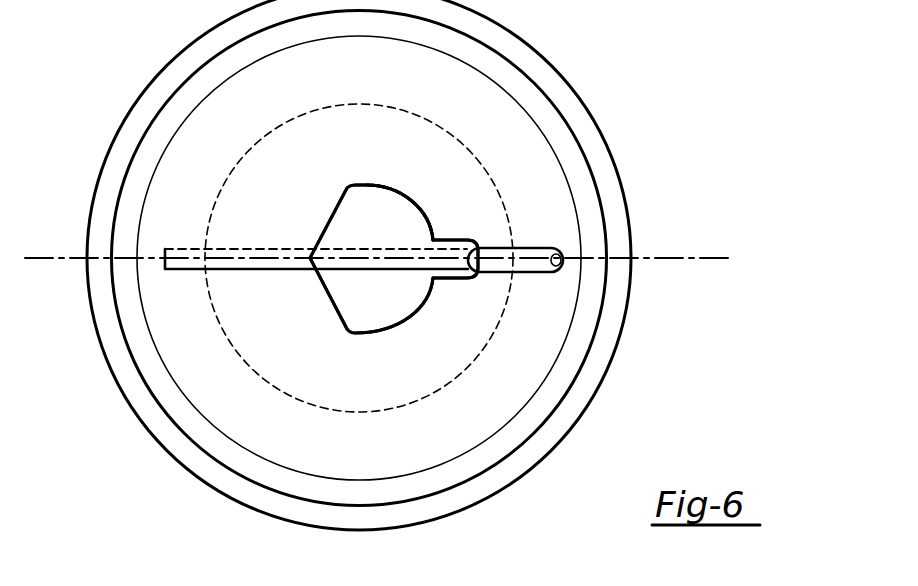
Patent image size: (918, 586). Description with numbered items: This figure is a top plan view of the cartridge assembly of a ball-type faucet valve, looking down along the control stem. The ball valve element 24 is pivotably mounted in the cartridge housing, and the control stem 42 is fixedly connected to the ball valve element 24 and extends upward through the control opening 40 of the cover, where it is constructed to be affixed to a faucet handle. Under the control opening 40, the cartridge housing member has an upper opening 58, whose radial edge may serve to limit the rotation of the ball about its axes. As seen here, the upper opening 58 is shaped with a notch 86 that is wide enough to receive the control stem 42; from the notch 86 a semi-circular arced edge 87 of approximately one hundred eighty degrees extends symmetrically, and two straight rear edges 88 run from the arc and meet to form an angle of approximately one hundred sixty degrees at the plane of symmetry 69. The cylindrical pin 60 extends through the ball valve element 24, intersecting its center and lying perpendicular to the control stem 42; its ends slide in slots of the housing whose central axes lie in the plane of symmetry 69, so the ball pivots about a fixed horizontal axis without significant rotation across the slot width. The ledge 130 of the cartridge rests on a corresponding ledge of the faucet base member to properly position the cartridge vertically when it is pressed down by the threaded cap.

The ball valve element 24 is at (347, 187).
The control opening 40 is at (460, 62).
The control stem 42 is at (565, 247).
The upper opening 58 is at (410, 225).
The cylindrical pin 60 is at (250, 269).
The plane of symmetry 69 is at (625, 265).
The notch 86 is at (470, 263).
The semi-circular arced edge 87 is at (372, 224).
The straight rear edges 88 is at (340, 222).
The ledge 130 is at (180, 458).